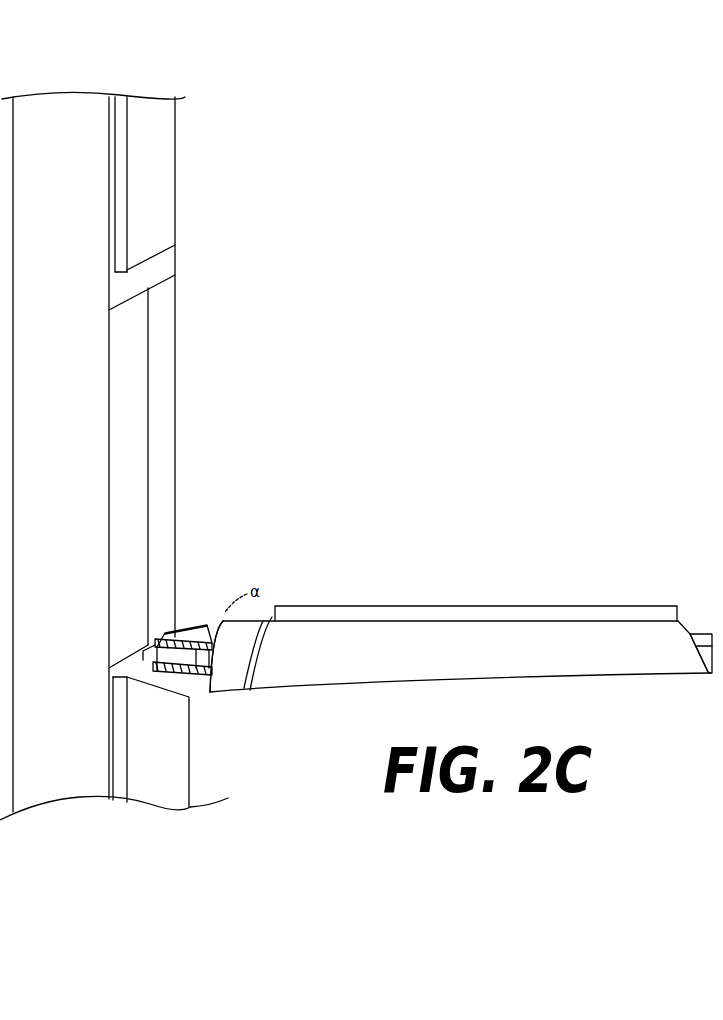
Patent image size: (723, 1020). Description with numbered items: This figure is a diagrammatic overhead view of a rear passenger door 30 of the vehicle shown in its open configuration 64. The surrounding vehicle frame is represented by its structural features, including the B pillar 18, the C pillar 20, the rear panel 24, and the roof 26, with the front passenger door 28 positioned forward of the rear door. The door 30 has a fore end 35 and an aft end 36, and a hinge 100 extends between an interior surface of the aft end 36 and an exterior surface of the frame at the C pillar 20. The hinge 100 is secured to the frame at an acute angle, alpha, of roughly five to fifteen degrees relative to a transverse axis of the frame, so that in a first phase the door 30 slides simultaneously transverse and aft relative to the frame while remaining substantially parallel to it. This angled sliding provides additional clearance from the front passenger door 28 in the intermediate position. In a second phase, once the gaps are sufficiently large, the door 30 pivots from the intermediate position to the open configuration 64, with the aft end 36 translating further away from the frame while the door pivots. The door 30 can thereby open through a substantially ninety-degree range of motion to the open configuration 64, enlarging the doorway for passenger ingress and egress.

The B pillar 18 is at (172, 276).
The C pillar 20 is at (165, 633).
The rear panel 24 is at (147, 756).
The roof 26 is at (76, 493).
The front passenger door 28 is at (141, 205).
The door 30 is at (462, 663).
The fore end 35 is at (677, 676).
The aft end 36 is at (228, 683).
The open configuration 64 is at (479, 574).
The hinge 100 is at (214, 584).